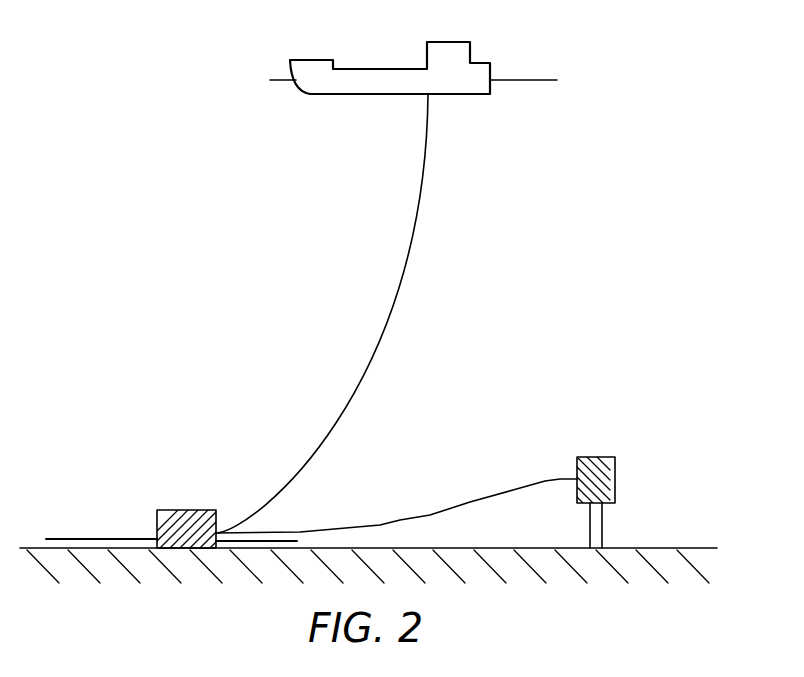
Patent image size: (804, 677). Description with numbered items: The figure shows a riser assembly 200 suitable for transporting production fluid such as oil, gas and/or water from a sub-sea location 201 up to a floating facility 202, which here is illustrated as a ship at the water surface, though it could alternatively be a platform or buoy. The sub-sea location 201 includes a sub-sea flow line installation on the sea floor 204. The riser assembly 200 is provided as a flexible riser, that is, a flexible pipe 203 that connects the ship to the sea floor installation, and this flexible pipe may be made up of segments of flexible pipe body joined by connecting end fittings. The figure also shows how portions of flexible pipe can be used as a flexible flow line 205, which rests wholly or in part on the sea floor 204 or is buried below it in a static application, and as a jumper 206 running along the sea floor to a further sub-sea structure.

The riser assembly 200 is at (440, 173).
The sub-sea location 201 is at (185, 510).
The floating facility 202 is at (308, 58).
The flexible pipe 203 is at (363, 380).
The sea floor 204 is at (672, 548).
The flexible flow line 205 is at (87, 538).
The jumper 206 is at (513, 483).